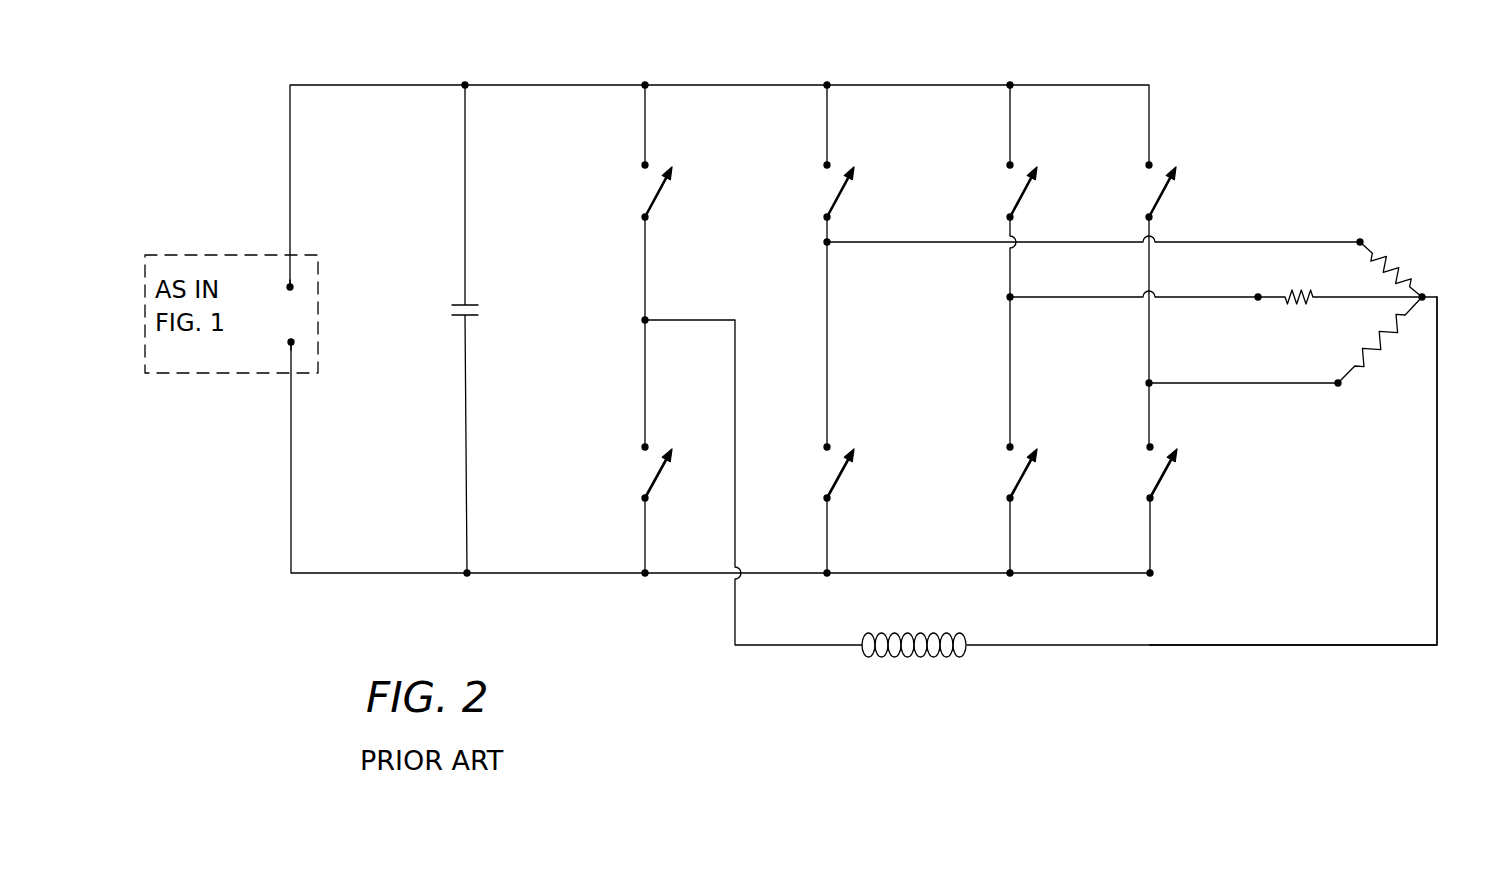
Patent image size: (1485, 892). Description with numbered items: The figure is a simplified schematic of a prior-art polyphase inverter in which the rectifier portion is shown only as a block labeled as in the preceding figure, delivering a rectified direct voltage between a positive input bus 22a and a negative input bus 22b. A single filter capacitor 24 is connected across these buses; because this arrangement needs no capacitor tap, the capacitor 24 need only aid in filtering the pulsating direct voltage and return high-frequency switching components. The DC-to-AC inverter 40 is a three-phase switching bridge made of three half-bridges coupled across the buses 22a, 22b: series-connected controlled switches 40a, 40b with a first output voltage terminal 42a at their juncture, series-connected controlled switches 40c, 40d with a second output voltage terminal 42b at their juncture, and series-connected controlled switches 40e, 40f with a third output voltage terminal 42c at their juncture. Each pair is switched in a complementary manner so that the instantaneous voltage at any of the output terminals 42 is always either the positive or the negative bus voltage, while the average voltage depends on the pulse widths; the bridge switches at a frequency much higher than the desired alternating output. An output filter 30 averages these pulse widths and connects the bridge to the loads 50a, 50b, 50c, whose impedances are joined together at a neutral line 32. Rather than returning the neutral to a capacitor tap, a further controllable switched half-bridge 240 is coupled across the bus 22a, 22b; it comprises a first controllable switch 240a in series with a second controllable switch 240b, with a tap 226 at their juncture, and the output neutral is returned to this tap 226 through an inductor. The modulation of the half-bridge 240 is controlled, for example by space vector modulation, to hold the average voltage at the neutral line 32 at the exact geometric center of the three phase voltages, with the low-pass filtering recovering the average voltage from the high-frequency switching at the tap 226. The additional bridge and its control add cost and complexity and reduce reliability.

The positive input bus 22a is at (290, 287).
The negative input bus 22b is at (291, 342).
The filter capacitor 24 is at (478, 316).
The tap 226 is at (648, 322).
The controllable switched half-bridge 240 is at (620, 167).
The first controllable switch 240a is at (662, 202).
The second controllable switch 240b is at (660, 476).
The DC-to-AC inverter 40 is at (921, 49).
The controlled switch 40a is at (846, 205).
The controlled switch 40b is at (840, 483).
The controlled switch 40c is at (1027, 205).
The controlled switch 40d is at (1025, 478).
The controlled switch 40e is at (1166, 203).
The controlled switch 40f is at (1165, 478).
The output terminals 42 is at (935, 343).
The first output voltage terminal 42a is at (830, 245).
The second output voltage terminal 42b is at (1012, 300).
The third output voltage terminal 42c is at (1151, 386).
The load 50a is at (1400, 270).
The load 50b is at (1297, 305).
The load 50c is at (1375, 352).
The output filter 30 is at (915, 652).
The neutral line 32 is at (1215, 646).